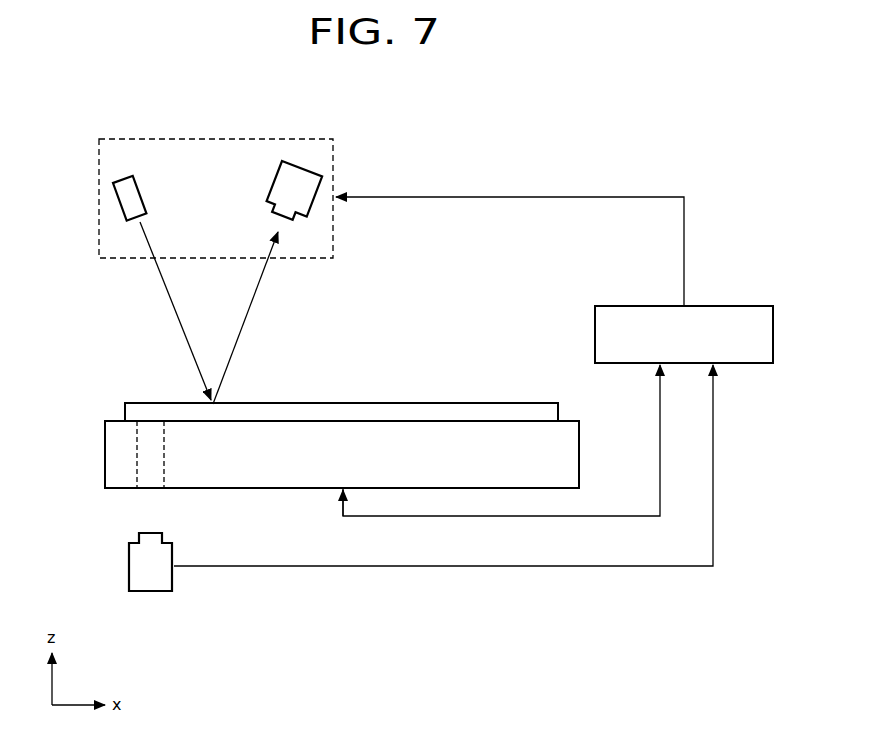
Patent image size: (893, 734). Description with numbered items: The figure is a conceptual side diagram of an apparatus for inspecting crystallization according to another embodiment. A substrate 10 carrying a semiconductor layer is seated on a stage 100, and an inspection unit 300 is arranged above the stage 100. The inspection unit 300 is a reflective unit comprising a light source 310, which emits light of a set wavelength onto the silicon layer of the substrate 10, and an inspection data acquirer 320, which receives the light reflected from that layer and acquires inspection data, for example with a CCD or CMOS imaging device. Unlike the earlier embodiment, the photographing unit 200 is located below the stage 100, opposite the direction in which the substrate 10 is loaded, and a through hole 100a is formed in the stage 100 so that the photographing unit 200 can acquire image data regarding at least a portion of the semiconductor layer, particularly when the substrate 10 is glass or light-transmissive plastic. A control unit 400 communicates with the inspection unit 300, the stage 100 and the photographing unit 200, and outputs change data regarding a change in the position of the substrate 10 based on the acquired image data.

The inspection unit 300 is at (217, 138).
The light source 310 is at (133, 177).
The inspection data acquirer 320 is at (303, 177).
The substrate 10 is at (554, 407).
The stage 100 is at (575, 457).
The through hole 100a is at (137, 477).
The control unit 400 is at (730, 306).
The photographing unit 200 is at (149, 591).